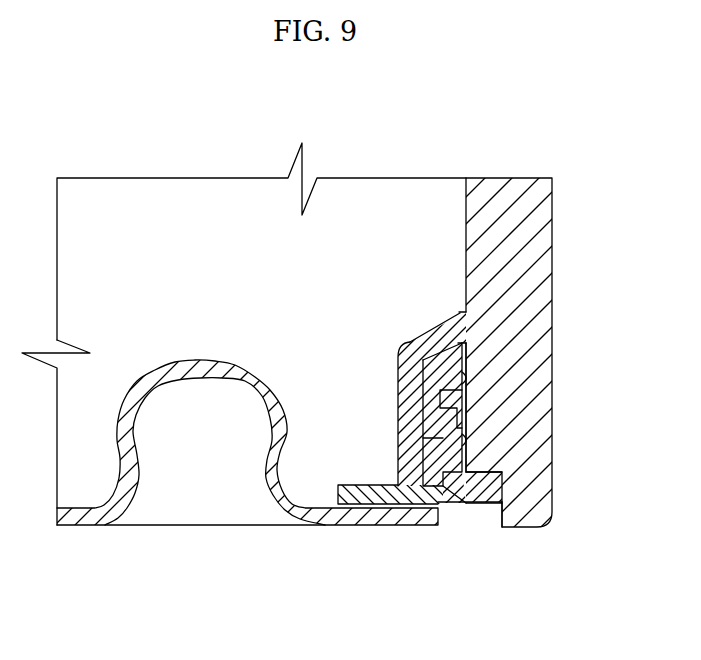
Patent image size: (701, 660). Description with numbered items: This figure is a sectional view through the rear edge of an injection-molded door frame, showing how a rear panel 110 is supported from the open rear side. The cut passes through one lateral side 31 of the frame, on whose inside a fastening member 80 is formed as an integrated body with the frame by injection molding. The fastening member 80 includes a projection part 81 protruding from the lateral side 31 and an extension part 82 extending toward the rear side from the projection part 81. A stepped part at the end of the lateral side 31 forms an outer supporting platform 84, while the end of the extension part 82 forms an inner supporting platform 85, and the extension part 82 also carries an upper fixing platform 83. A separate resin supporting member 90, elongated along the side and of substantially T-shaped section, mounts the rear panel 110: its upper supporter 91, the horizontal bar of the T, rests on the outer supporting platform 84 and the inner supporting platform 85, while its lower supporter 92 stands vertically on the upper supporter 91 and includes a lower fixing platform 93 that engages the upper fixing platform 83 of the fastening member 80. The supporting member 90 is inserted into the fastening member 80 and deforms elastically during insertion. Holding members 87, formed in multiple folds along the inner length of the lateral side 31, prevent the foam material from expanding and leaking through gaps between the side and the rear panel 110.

The lateral side 31 is at (550, 246).
The fastening member 80 is at (452, 373).
The projection part 81 is at (431, 330).
The extension part 82 is at (397, 380).
The upper fixing platform 83 is at (425, 440).
The outer supporting platform 84 is at (538, 469).
The inner supporting platform 85 is at (400, 486).
The holding member 87 is at (470, 440).
The supporting member 90 is at (465, 508).
The upper supporter 91 is at (500, 481).
The lower supporter 92 is at (526, 355).
The lower fixing platform 93 is at (445, 423).
The rear panel 110 is at (313, 513).